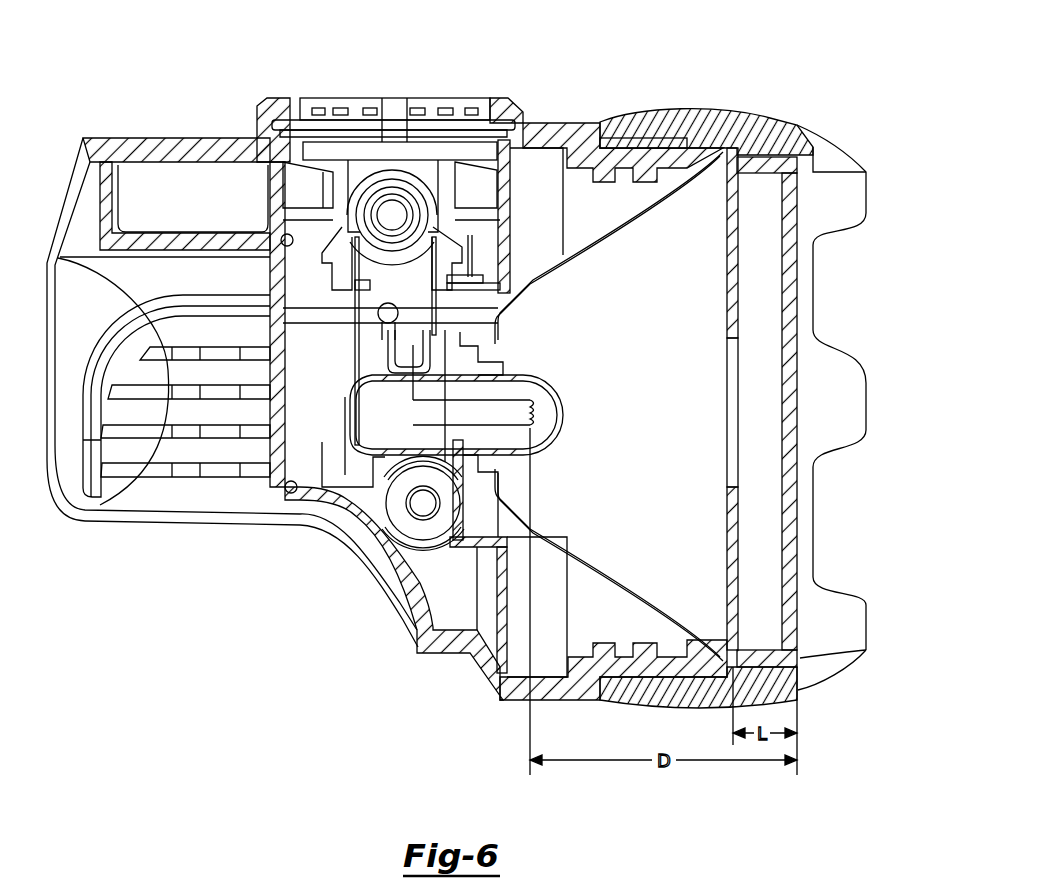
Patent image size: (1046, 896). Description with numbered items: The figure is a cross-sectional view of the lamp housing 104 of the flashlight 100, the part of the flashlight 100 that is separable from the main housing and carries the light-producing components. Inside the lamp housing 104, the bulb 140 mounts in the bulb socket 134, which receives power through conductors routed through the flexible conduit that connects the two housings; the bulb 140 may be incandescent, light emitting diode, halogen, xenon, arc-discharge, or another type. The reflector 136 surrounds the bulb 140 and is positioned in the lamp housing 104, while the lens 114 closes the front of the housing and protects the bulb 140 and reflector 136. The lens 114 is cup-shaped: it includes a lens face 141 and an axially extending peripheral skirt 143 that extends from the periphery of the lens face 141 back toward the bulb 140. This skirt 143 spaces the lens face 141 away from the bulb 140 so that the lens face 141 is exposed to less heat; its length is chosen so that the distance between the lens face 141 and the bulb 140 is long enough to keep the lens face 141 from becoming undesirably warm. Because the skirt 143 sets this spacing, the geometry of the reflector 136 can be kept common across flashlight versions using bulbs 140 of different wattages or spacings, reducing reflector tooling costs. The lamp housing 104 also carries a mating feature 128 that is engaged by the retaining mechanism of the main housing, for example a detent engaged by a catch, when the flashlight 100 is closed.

The flashlight 100 is at (100, 71).
The lamp housing 104 is at (173, 138).
The lens 114 is at (797, 366).
The mating feature 128 is at (218, 472).
The bulb socket 134 is at (404, 340).
The reflector 136 is at (553, 565).
The bulb 140 is at (562, 405).
The lens face 141 is at (795, 462).
The axially extending peripheral skirt 143 is at (757, 160).